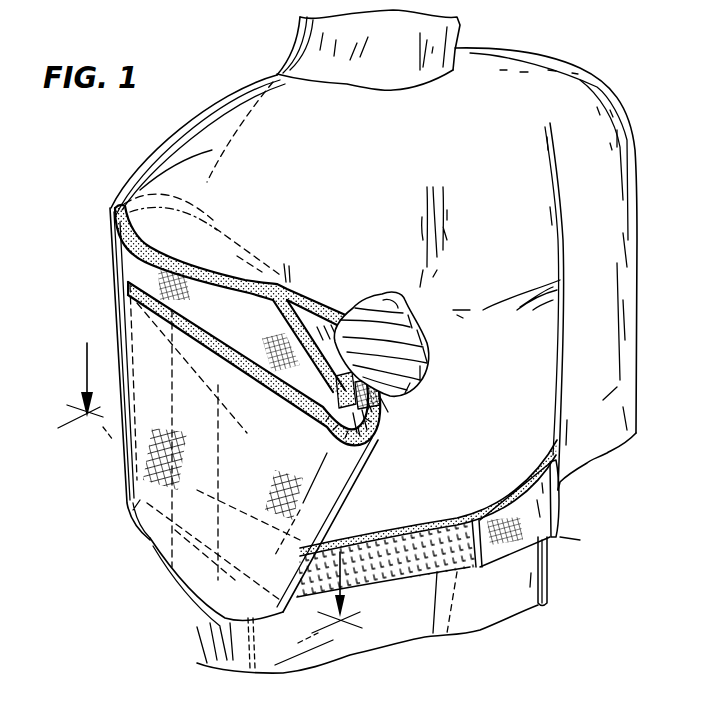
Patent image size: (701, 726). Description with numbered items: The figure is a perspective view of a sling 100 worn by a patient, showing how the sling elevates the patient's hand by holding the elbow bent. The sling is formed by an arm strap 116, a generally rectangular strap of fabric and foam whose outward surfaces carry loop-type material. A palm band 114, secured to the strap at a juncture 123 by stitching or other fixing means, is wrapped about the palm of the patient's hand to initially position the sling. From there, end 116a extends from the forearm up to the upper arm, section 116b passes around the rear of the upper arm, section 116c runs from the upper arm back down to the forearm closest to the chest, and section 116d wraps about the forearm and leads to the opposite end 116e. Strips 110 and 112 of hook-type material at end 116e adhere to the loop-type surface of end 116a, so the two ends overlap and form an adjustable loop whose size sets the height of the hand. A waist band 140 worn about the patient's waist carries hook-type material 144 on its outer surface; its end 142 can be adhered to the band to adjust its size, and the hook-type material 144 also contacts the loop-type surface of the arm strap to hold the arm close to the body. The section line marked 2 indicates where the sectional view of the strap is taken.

The sling 100 is at (340, 236).
The strip of hook-type material 110 is at (238, 420).
The strip of hook-type material 112 is at (186, 362).
The palm band 114 is at (386, 409).
The arm strap 116 is at (100, 260).
The end portion of arm strap 116a is at (213, 280).
The section of arm strap 116b is at (115, 218).
The section of arm strap 116c is at (236, 226).
The section of arm strap 116d is at (363, 475).
The end portion of arm strap 116e is at (133, 510).
The juncture 123 is at (268, 336).
The waist band 140 is at (387, 540).
The end of waist band 142 is at (541, 529).
The hook-type material 144 is at (410, 583).
The section line 2- 2 is at (210, 469).